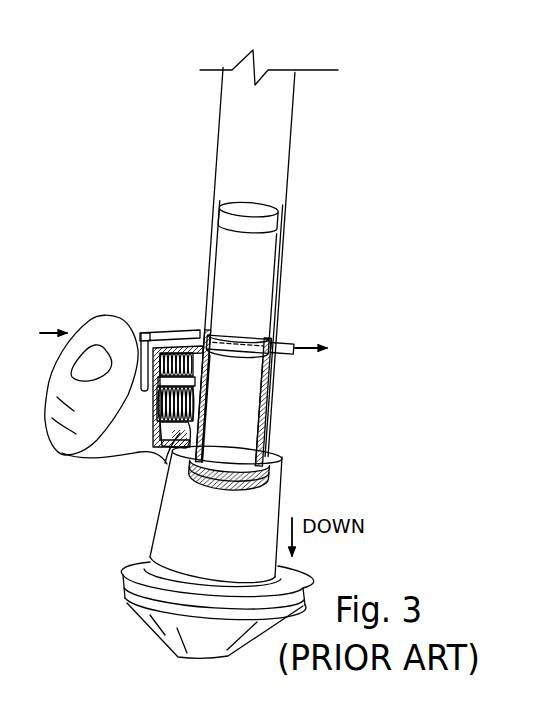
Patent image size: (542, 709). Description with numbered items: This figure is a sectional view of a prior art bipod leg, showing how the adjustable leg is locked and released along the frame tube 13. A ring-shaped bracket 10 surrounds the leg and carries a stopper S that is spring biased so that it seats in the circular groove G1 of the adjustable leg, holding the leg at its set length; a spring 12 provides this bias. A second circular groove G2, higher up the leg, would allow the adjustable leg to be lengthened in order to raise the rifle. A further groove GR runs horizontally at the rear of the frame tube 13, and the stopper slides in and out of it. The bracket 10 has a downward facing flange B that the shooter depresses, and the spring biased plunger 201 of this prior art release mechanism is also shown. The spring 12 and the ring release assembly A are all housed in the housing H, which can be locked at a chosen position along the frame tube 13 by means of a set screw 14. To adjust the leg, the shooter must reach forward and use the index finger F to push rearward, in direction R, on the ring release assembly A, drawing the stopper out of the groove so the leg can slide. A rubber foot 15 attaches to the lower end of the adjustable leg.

The frame tube 13 is at (232, 132).
The circular groove G2 is at (255, 218).
The circular groove G1 is at (255, 347).
The groove GR is at (263, 336).
The stopper S is at (265, 340).
The rearward direction R is at (192, 334).
The ring-shaped bracket 10 is at (177, 333).
The spring biased plunger 201 is at (147, 345).
The downward facing flange B is at (132, 340).
The spring 12 is at (163, 378).
The set screw 14 is at (167, 423).
The ring release assembly A is at (145, 428).
The index finger F is at (94, 323).
The housing H is at (152, 412).
The foot 15 is at (272, 492).